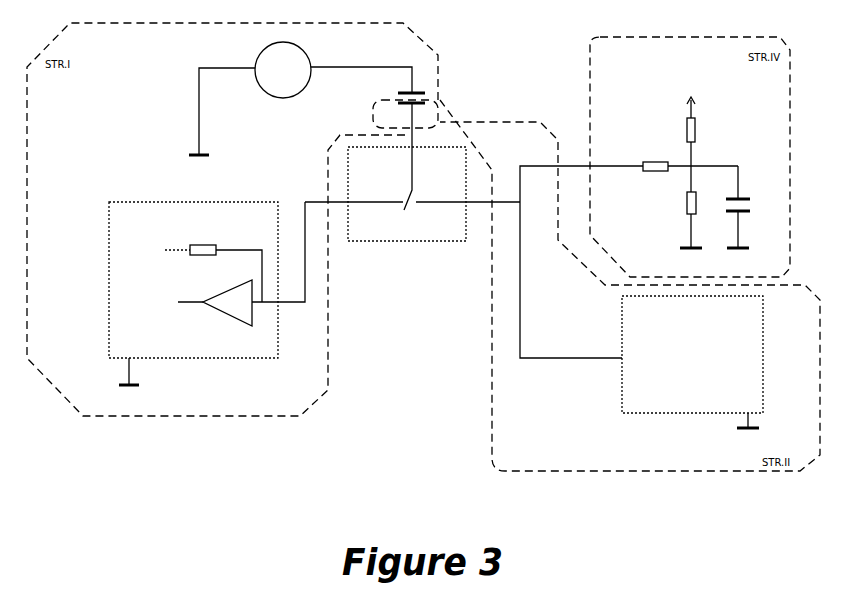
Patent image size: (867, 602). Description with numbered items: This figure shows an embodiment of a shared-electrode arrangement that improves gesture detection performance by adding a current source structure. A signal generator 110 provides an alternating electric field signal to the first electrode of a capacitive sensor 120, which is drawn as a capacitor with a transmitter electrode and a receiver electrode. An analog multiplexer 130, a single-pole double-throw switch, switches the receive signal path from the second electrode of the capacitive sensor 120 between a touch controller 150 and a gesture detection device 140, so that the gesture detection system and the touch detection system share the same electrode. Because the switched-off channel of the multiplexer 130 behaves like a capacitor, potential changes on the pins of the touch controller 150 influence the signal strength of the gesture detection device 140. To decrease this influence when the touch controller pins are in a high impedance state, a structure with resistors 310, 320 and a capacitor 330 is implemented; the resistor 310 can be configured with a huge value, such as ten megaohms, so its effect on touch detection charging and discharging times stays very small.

The signal generator 110 is at (283, 98).
The capacitive sensor 120 is at (432, 100).
The analog multiplexer 130 is at (452, 242).
The gesture detection device 140 is at (207, 303).
The touch controller 150 is at (692, 371).
The resistor 310 is at (697, 141).
The resistor 320 is at (686, 206).
The capacitor 330 is at (745, 205).